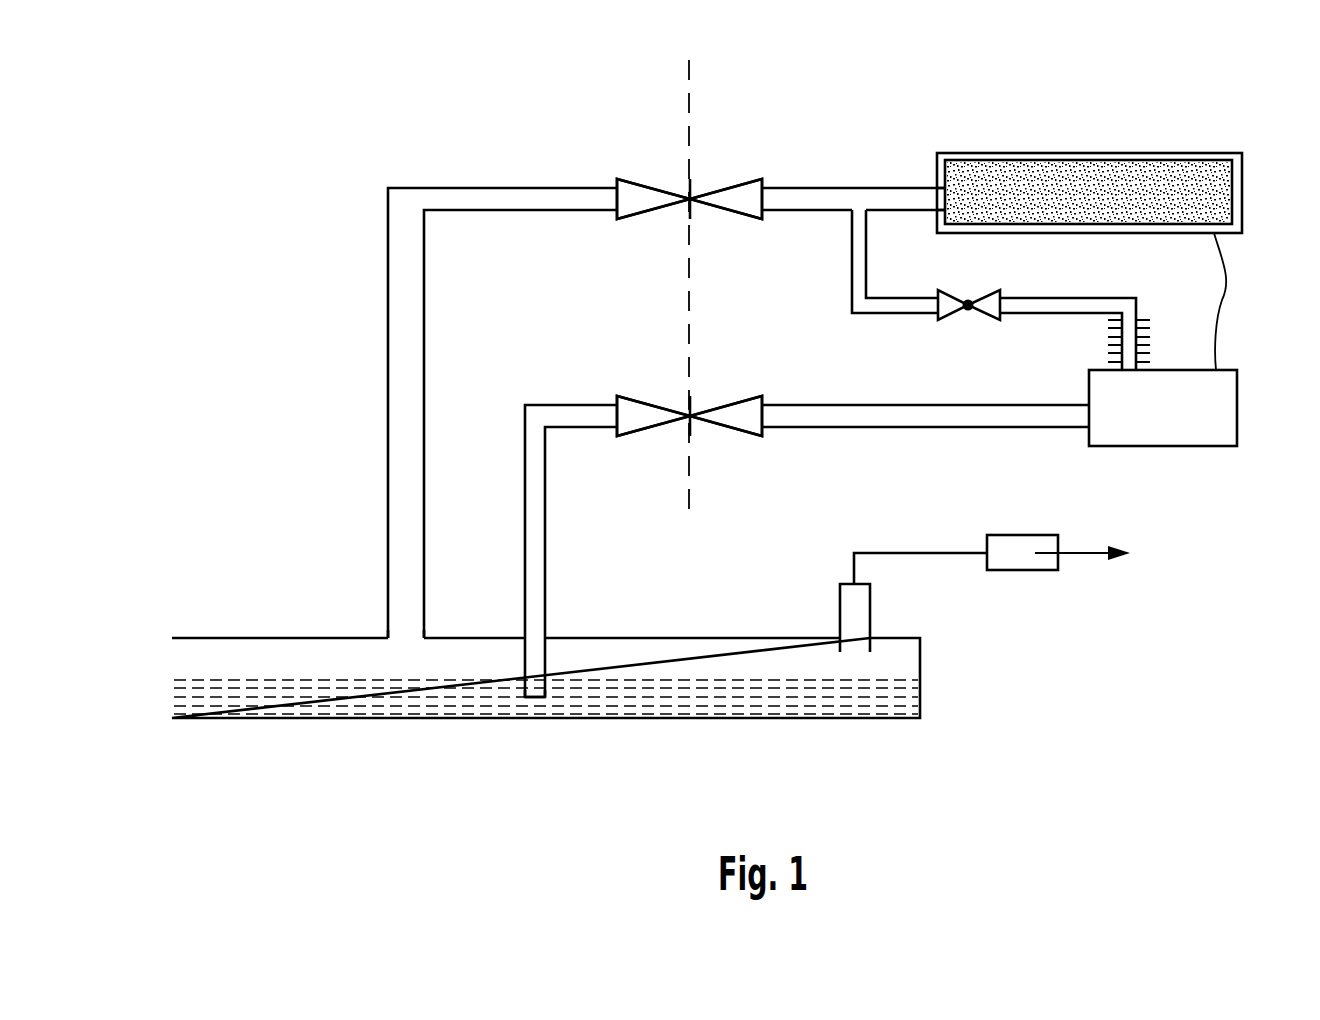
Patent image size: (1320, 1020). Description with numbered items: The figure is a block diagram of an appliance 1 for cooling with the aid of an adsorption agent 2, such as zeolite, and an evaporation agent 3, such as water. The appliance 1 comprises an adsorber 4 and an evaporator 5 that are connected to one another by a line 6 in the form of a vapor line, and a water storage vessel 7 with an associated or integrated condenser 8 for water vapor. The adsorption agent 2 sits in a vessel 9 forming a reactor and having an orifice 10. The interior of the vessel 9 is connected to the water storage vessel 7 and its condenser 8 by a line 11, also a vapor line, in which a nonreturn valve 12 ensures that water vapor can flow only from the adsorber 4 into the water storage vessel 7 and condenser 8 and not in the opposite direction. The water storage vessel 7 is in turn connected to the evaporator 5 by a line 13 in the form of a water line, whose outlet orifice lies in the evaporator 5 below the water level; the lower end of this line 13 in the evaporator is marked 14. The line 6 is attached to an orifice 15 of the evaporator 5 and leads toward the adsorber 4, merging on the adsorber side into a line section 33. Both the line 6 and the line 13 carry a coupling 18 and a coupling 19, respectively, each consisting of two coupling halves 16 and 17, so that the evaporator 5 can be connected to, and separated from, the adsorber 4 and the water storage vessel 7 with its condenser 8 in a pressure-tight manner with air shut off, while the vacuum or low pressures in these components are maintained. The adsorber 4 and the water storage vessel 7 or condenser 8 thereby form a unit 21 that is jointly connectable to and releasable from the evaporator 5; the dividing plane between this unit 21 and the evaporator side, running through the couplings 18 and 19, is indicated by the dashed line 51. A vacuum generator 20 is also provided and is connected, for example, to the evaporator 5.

The appliance 1 is at (343, 202).
The adsorption agent 2 is at (1082, 160).
The evaporation agent 3 is at (665, 700).
The adsorber 4 is at (1166, 142).
The evaporator 5 is at (761, 628).
The line 6 is at (400, 470).
The water storage vessel 7 is at (1248, 413).
The condenser 8 is at (1142, 318).
The vessel 9 is at (1010, 160).
The orifice 10 is at (940, 192).
The line 11 is at (857, 276).
The nonreturn valve 12 is at (968, 314).
The line 13 is at (546, 608).
The line end 14 is at (536, 697).
The orifice 15 is at (404, 637).
The coupling half 16 is at (680, 217).
The coupling half 17 is at (748, 217).
The coupling 18 is at (664, 180).
The coupling 19 is at (663, 396).
The vacuum generator 20 is at (1013, 550).
The unit 21 is at (1236, 301).
The line section 33 is at (806, 194).
The separation line 51 is at (688, 110).